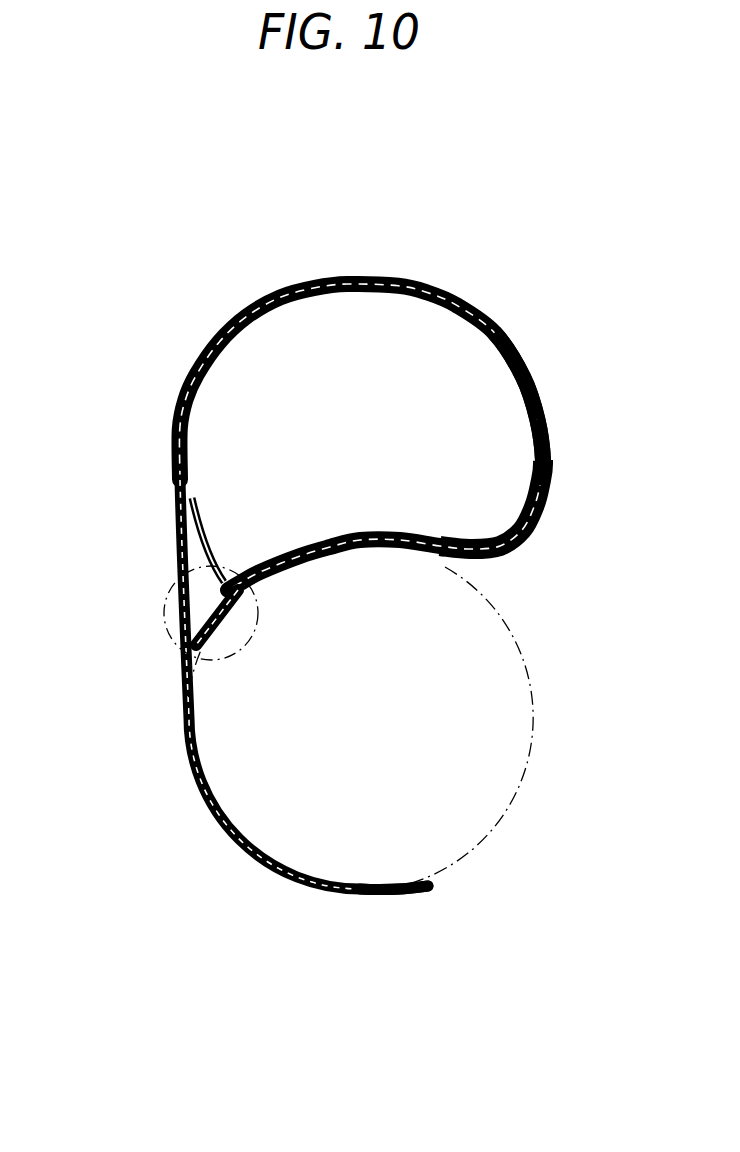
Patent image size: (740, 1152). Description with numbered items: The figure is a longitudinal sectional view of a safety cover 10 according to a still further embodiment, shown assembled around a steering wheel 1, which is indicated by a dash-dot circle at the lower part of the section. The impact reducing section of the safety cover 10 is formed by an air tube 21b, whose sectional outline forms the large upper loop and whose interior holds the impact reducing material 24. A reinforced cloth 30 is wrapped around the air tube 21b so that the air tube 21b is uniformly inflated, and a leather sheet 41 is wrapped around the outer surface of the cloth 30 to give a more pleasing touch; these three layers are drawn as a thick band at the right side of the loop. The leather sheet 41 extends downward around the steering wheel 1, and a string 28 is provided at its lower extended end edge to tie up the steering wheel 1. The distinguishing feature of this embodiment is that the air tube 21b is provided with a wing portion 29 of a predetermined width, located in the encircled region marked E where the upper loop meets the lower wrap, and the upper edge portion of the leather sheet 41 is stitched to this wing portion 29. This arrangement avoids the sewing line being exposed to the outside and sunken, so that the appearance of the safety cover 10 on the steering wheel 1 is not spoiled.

The safety cover 10 is at (320, 518).
The impact reducing material 24 is at (272, 392).
The air tube 21b is at (533, 382).
The reinforced cloth 30 is at (548, 430).
The leather sheet 41 is at (550, 480).
The wing portion 29 is at (178, 620).
The steering wheel 1 is at (513, 733).
The string 28 is at (430, 895).
The region E is at (165, 638).